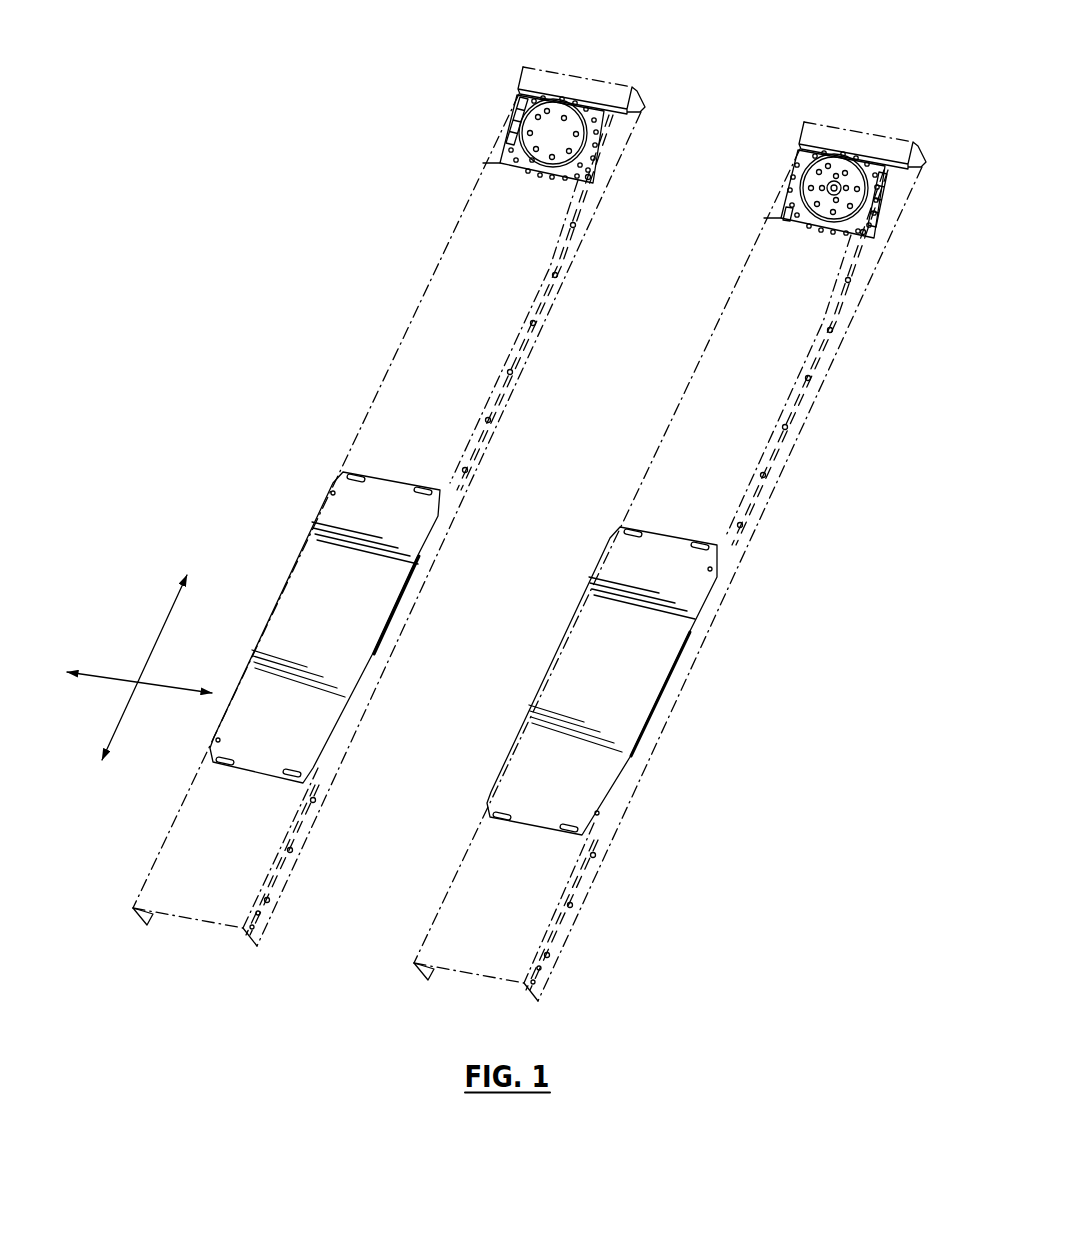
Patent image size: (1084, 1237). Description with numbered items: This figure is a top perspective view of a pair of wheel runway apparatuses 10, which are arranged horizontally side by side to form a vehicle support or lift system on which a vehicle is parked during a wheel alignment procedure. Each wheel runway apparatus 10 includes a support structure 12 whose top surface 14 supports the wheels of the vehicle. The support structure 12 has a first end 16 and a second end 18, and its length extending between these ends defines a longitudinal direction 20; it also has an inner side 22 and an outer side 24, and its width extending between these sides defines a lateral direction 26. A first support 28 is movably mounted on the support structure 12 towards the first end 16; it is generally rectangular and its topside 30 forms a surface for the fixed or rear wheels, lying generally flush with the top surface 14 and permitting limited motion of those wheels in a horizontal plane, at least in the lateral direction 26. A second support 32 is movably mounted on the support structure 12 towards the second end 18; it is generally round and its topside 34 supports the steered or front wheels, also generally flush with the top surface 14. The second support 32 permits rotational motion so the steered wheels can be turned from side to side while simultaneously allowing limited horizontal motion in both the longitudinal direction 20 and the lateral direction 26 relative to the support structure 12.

The wheel runway apparatus 10 is at (496, 504).
The support structure 12 is at (405, 504).
The top surface 14 is at (422, 415).
The first end 16 is at (192, 920).
The second end 18 is at (581, 75).
The longitudinal direction 20 is at (168, 620).
The inner side 22 is at (533, 336).
The outer side 24 is at (403, 330).
The lateral direction 26 is at (103, 675).
The first support 28 is at (310, 705).
The topside 30 is at (317, 624).
The second support 32 is at (590, 137).
The topside 34 is at (540, 144).